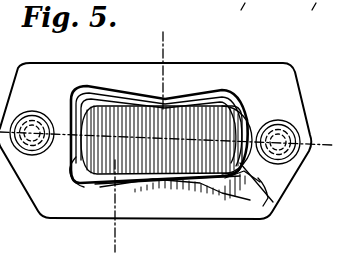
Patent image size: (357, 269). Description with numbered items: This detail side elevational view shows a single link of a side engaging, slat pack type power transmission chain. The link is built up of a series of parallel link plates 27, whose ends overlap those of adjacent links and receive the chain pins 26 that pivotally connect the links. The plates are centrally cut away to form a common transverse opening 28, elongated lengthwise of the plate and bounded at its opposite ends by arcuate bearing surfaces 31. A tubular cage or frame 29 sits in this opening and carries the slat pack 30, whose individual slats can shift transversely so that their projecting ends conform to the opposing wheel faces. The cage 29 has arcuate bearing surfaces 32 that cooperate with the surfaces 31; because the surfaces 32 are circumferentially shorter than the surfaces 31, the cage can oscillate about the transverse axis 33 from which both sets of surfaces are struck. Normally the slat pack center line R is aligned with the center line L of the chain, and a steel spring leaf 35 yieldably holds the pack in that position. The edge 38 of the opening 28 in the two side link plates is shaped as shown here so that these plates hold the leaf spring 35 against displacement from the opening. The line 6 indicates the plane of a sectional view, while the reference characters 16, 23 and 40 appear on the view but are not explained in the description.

The section line 6- 6 is at (186, 45).
The vehicle body 16 is at (320, 13).
The lamp opening 23 is at (250, 12).
The chain pin 26 is at (284, 165).
The link plate 27 is at (243, 221).
The common transverse opening 28 is at (213, 96).
The cage or frame 29 is at (215, 168).
The slat pack 30 is at (176, 183).
The arcuate bearing surface 31 is at (79, 91).
The arcuate bearing surface 32 is at (68, 165).
The transverse axis 33 is at (152, 112).
The steel spring leaf 35 is at (90, 185).
The edge of the opening 38 is at (172, 186).
The housing flange 40 is at (88, 130).
The slat pack center line R is at (240, 123).
The center line of the chain L is at (322, 145).